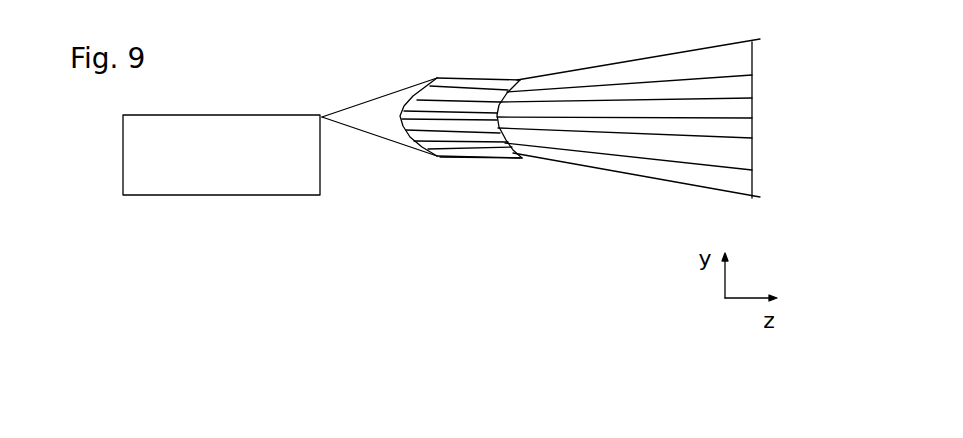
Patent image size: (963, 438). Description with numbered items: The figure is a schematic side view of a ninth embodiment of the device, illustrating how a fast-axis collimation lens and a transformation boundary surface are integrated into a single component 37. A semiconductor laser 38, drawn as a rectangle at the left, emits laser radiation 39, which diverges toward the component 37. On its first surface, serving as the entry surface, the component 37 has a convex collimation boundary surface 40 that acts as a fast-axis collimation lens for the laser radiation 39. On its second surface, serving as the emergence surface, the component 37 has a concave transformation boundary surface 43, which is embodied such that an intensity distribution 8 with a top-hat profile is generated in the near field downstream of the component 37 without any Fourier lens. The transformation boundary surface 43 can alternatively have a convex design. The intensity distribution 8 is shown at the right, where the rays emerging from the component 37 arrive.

The semiconductor laser 38 is at (208, 195).
The laser radiation 39 is at (376, 118).
The convex collimation boundary surface 40 is at (411, 90).
The component 37 is at (472, 161).
The concave transformation boundary surface 43 is at (500, 105).
The intensity distribution 8 is at (752, 103).